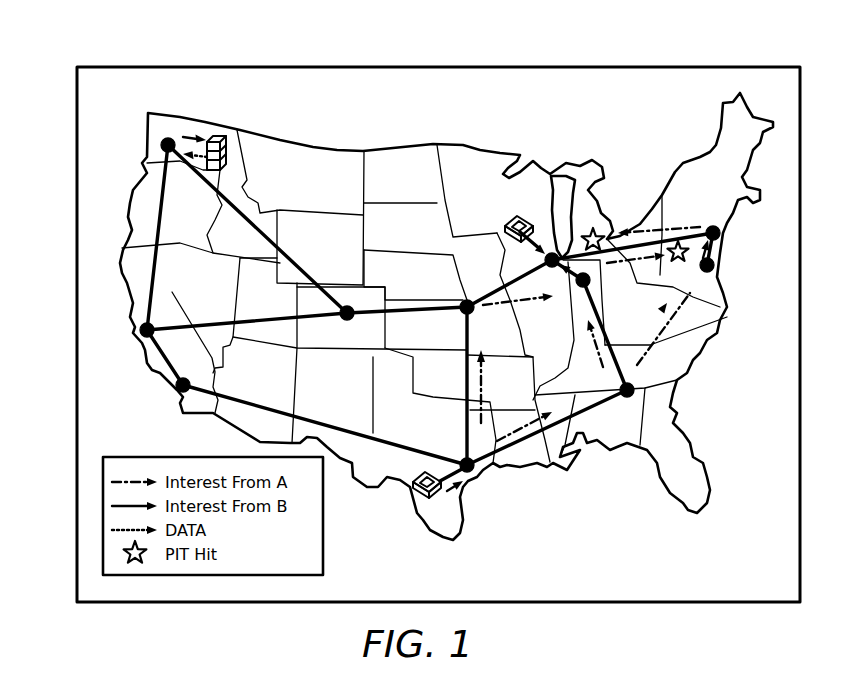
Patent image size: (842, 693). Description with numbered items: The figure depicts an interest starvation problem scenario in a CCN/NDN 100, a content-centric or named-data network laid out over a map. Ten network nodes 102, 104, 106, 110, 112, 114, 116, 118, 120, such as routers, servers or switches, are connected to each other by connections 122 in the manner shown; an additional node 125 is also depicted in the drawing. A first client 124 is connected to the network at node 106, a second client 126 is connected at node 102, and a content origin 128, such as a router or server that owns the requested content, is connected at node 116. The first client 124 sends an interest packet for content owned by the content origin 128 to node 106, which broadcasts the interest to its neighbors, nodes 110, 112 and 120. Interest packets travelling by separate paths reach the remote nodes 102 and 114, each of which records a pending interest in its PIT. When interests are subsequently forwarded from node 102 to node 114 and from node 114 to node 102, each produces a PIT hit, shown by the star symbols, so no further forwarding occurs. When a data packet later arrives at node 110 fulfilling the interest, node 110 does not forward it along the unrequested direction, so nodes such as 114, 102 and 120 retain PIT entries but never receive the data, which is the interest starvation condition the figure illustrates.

The CCN/NDN 100 is at (88, 57).
The network node 102 is at (710, 282).
The network node 104 is at (347, 325).
The network node 106 is at (453, 453).
The network node 110 is at (453, 317).
The network node 112 is at (225, 390).
The network node 114 is at (648, 232).
The network node 116 is at (165, 137).
The network node 118 is at (187, 325).
The network node 120 is at (639, 401).
The connections 122 is at (168, 293).
The first client 124 is at (423, 492).
The network node 125 is at (573, 291).
The second client 126 is at (503, 222).
The content origin 128 is at (219, 142).